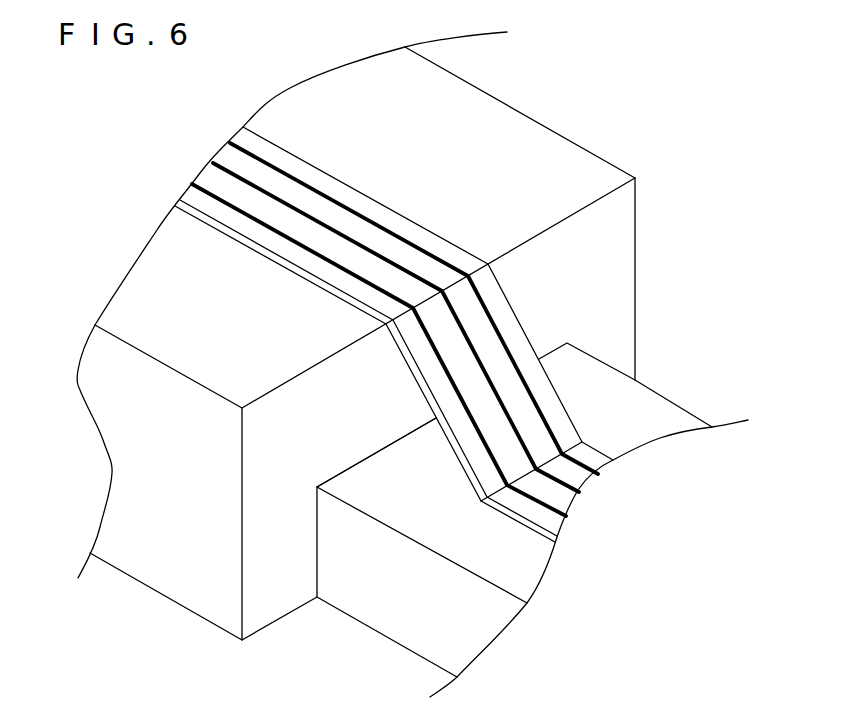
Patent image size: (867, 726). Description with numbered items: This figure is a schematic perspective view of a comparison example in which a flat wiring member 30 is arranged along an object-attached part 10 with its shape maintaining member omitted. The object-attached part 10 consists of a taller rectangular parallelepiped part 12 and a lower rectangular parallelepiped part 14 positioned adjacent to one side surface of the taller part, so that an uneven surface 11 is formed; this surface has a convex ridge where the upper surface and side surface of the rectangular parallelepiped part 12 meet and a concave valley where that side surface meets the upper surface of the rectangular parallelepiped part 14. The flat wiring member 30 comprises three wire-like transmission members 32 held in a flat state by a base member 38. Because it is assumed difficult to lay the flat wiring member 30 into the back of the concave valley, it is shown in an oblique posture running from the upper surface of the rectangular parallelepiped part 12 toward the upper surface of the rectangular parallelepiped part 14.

The object-attached part 10 is at (416, 362).
The uneven surface 11 is at (547, 323).
The rectangular parallelepiped part 12 is at (585, 148).
The rectangular parallelepiped part 14 is at (682, 408).
The flat wiring member 30 is at (394, 317).
The wire-like transmission members 32 is at (367, 277).
The base member 38 is at (453, 243).